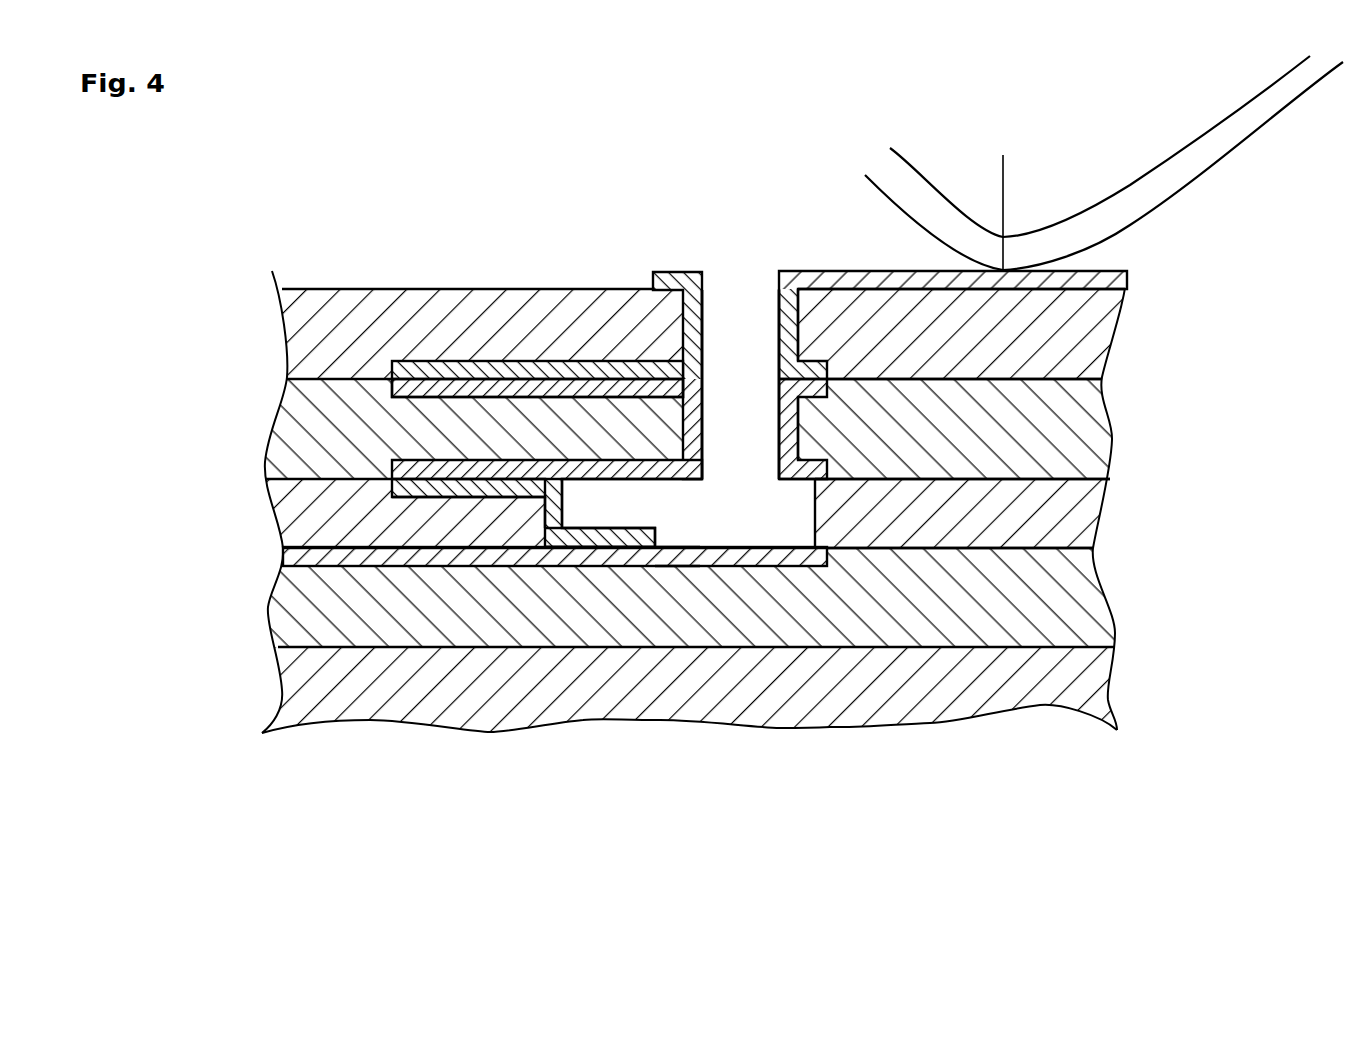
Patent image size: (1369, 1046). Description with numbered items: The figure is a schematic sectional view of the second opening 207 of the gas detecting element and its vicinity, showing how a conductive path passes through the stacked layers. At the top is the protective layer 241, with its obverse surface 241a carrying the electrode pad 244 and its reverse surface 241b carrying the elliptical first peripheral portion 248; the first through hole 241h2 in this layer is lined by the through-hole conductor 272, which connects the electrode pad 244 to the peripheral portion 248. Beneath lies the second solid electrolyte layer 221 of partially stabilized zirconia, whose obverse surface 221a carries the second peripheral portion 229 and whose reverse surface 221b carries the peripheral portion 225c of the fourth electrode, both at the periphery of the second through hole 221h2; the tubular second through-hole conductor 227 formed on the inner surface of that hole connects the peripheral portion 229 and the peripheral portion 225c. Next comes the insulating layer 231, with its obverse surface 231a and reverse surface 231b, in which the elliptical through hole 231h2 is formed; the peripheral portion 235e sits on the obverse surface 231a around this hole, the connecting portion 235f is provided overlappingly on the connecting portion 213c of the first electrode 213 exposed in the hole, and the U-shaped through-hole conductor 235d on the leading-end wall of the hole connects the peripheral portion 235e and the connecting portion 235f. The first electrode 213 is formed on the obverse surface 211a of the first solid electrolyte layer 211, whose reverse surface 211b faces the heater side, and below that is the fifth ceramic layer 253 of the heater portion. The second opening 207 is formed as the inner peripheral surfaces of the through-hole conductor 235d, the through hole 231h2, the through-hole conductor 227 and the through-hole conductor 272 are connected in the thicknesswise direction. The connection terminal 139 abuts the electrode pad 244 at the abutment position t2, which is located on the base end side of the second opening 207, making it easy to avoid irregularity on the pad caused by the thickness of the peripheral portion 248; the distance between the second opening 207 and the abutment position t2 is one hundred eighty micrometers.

The connection terminal 139 is at (1203, 157).
The abutment position t2 is at (1008, 198).
The second opening 207 is at (775, 399).
The first solid electrolyte layer 211 is at (1070, 609).
The obverse surface of first solid electrolyte layer 211a is at (1052, 540).
The reverse surface of first solid electrolyte layer 211b is at (1065, 647).
The first electrode 213 is at (393, 552).
The connecting portion 213c is at (673, 553).
The second solid electrolyte layer 221 is at (1060, 433).
The obverse surface of second solid electrolyte layer 221a is at (1082, 371).
The reverse surface of second solid electrolyte layer 221b is at (1047, 492).
The second through hole 221h2 is at (781, 432).
The peripheral portion 225c is at (517, 466).
The second through-hole conductor 227 is at (700, 423).
The second peripheral portion 229 is at (458, 398).
The insulating layer 231 is at (1055, 510).
The obverse surface of insulating layer 231a is at (1066, 468).
The reverse surface of insulating layer 231b is at (1043, 575).
The through hole 231h2 is at (813, 520).
The through-hole conductor 235d is at (552, 513).
The peripheral portion 235e is at (427, 488).
The connecting portion 235f is at (623, 535).
The protective layer 241 is at (1082, 333).
The obverse surface of protective layer 241a is at (1100, 296).
The reverse surface of protective layer 241b is at (1047, 385).
The first through hole 241h2 is at (797, 327).
The electrode pad 244 is at (1100, 282).
The first peripheral portion 248 is at (421, 362).
The fifth ceramic layer 253 is at (1070, 690).
The through-hole conductor 272 is at (711, 308).